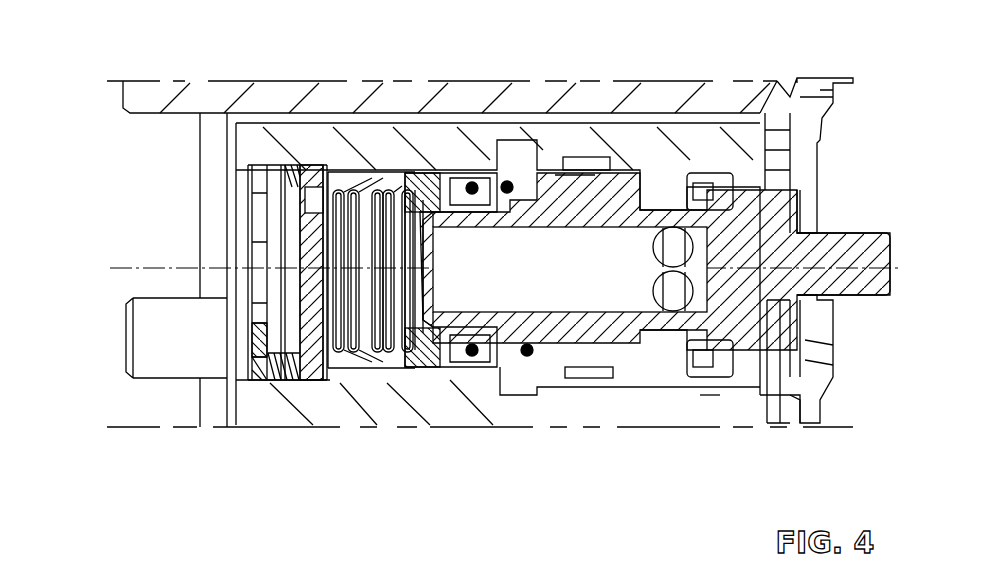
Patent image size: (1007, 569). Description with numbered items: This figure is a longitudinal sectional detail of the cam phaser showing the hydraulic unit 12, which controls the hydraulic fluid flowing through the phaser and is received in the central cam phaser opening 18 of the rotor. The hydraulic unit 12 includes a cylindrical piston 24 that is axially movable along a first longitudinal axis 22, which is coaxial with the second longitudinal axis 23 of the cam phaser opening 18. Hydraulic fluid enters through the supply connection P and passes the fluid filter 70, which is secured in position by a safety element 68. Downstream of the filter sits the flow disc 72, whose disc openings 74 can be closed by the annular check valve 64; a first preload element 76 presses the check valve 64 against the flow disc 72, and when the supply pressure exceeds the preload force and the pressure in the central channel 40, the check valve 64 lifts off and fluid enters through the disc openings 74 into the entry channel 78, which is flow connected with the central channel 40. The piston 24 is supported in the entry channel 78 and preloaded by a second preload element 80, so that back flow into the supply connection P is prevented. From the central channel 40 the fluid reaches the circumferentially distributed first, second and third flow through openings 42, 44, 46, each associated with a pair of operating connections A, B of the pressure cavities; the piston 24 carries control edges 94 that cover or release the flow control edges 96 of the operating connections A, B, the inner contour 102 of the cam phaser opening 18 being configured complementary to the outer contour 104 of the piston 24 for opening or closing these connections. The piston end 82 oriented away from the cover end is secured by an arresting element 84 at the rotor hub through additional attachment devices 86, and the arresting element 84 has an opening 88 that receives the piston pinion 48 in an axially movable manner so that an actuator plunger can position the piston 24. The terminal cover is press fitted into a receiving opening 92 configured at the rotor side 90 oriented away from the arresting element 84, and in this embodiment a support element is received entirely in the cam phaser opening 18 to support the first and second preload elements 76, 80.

The hydraulic unit 12 is at (858, 171).
The cam phaser opening 18 is at (686, 340).
The first longitudinal axis 22 is at (173, 267).
The second longitudinal axis 23 is at (126, 225).
The piston 24 is at (758, 370).
The central channel 40 is at (529, 300).
The first flow through opening 42 is at (643, 170).
The second flow through opening 44 is at (652, 247).
The third flow through opening 46 is at (700, 350).
The piston pinion 48 is at (890, 243).
The check valve 64 is at (370, 257).
The safety element 68 is at (258, 163).
The fluid filter 70 is at (273, 220).
The flow disc 72 is at (308, 150).
The disc openings 74 is at (296, 195).
The first preload element 76 is at (377, 352).
The entry channel 78 is at (352, 345).
The second preload element 80 is at (485, 368).
The piston end 82 is at (823, 315).
The arresting element 84 is at (820, 348).
The attachment devices 86 is at (820, 122).
The opening 88 is at (817, 225).
The rotor side 90 is at (392, 162).
The receiving opening 92 is at (450, 130).
The control edges 94 is at (707, 170).
The flow control edges 96 is at (670, 190).
The inner contour 102 is at (607, 352).
The outer contour 104 is at (595, 378).
The first operating connection A is at (573, 170).
The second operating connection B is at (711, 395).
The supply connection P is at (108, 254).